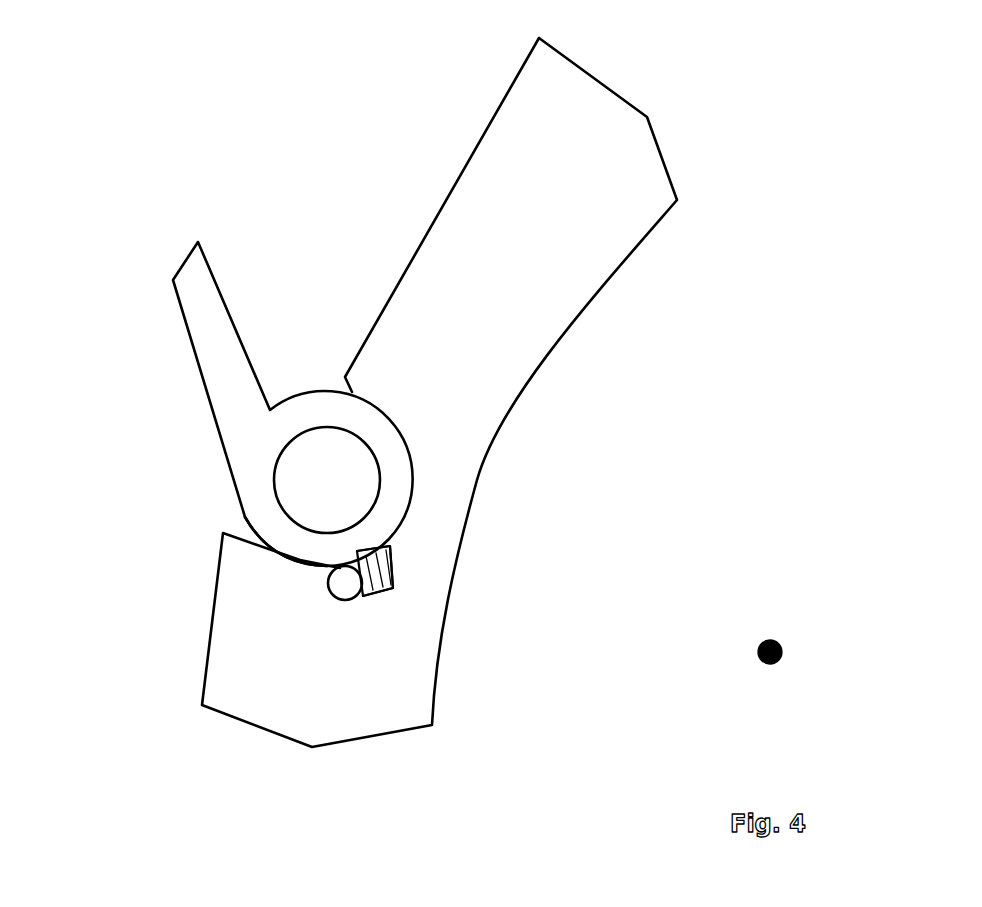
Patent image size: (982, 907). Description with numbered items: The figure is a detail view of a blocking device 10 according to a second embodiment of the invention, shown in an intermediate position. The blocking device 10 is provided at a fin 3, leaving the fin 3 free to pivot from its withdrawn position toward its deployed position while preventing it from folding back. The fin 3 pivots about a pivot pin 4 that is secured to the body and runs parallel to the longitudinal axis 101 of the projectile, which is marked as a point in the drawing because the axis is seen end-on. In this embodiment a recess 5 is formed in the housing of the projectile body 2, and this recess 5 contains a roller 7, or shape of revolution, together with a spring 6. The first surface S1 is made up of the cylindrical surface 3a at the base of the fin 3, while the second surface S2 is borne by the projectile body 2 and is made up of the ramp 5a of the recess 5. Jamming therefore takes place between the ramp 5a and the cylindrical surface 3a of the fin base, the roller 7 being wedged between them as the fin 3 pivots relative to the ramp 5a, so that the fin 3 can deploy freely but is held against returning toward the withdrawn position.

The projectile body 2 is at (630, 235).
The fin 3 is at (193, 288).
The cylindrical surface 3a is at (336, 562).
The first surface S1 is at (207, 535).
The pivot pin 4 is at (350, 477).
The recess 5 is at (388, 548).
The ramp 5a is at (327, 574).
The second surface S2 is at (246, 581).
The spring 6 is at (388, 588).
The roller 7 is at (343, 582).
The blocking device 10 is at (279, 258).
The longitudinal axis 101 is at (750, 643).